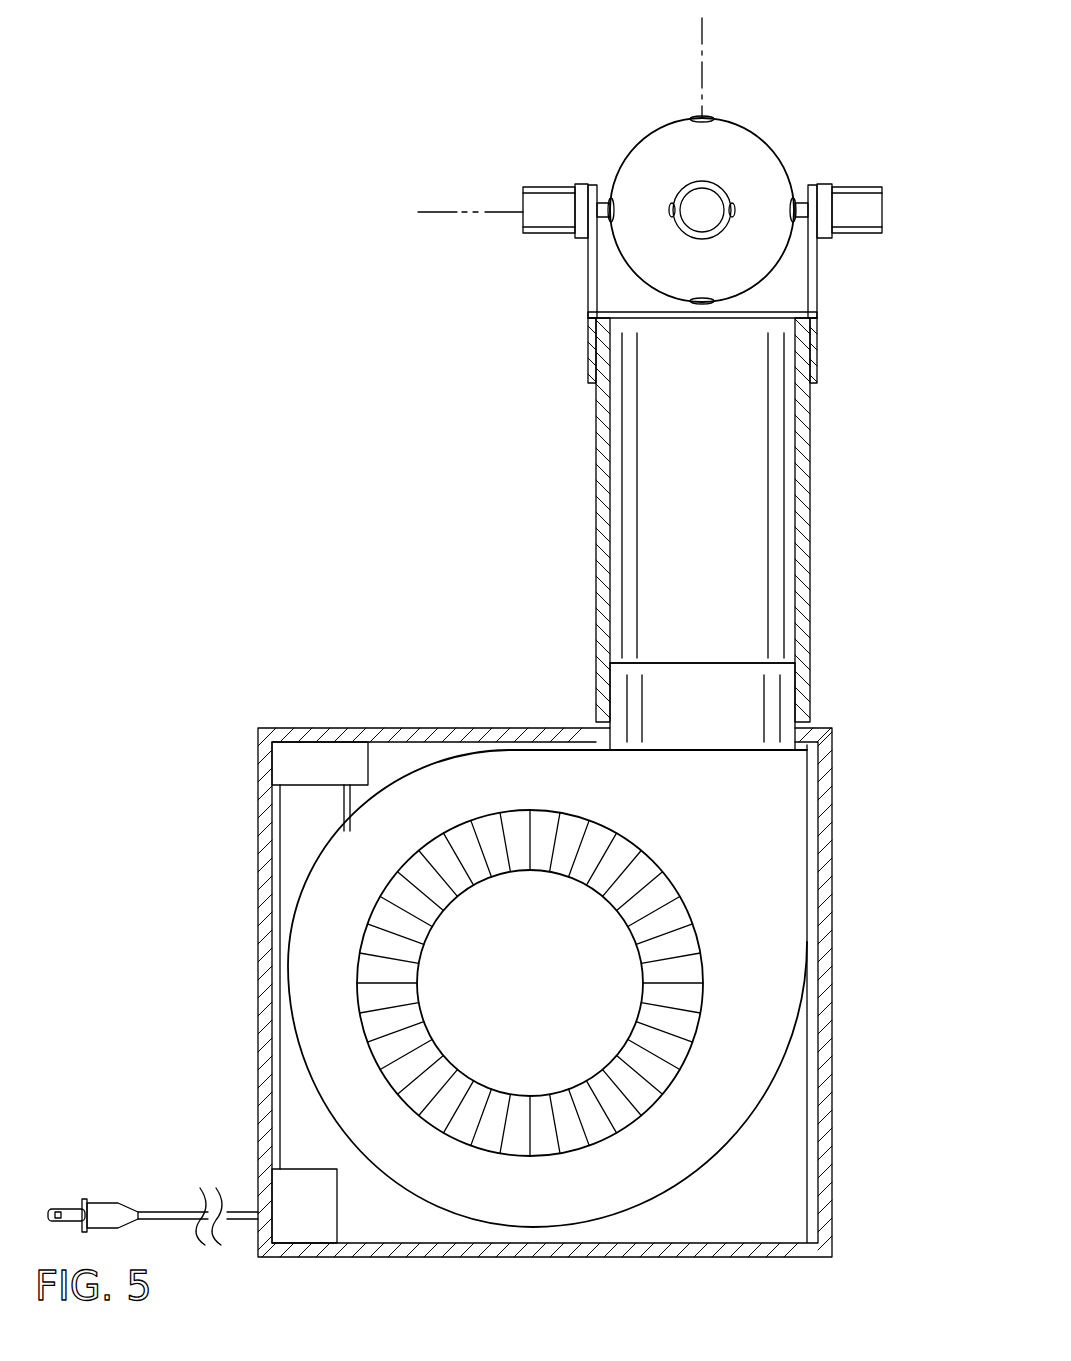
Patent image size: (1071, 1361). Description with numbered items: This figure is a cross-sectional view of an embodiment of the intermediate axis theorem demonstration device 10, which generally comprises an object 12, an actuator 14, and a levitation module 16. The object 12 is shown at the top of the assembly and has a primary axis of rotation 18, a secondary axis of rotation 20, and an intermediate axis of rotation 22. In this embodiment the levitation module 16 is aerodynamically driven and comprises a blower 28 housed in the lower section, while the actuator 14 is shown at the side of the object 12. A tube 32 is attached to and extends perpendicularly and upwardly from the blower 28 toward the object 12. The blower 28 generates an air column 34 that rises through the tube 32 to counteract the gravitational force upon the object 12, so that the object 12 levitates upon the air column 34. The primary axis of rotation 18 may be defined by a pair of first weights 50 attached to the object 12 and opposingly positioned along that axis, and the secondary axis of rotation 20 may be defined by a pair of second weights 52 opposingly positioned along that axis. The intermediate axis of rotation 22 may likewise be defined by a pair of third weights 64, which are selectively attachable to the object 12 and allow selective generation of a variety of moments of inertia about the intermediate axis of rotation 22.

The intermediate axis theorem demonstration device 10 is at (500, 634).
The object 12 is at (763, 138).
The actuator 14 is at (867, 185).
The levitation module 16 is at (258, 766).
The primary axis of rotation 18 is at (702, 212).
The secondary axis of rotation 20 is at (700, 92).
The intermediate axis of rotation 22 is at (442, 211).
The blower 28 is at (680, 970).
The tube 32 is at (595, 548).
The air column 34 is at (683, 442).
The first weights 50 is at (730, 228).
The second weights 52 is at (722, 117).
The third weights 64 is at (793, 187).